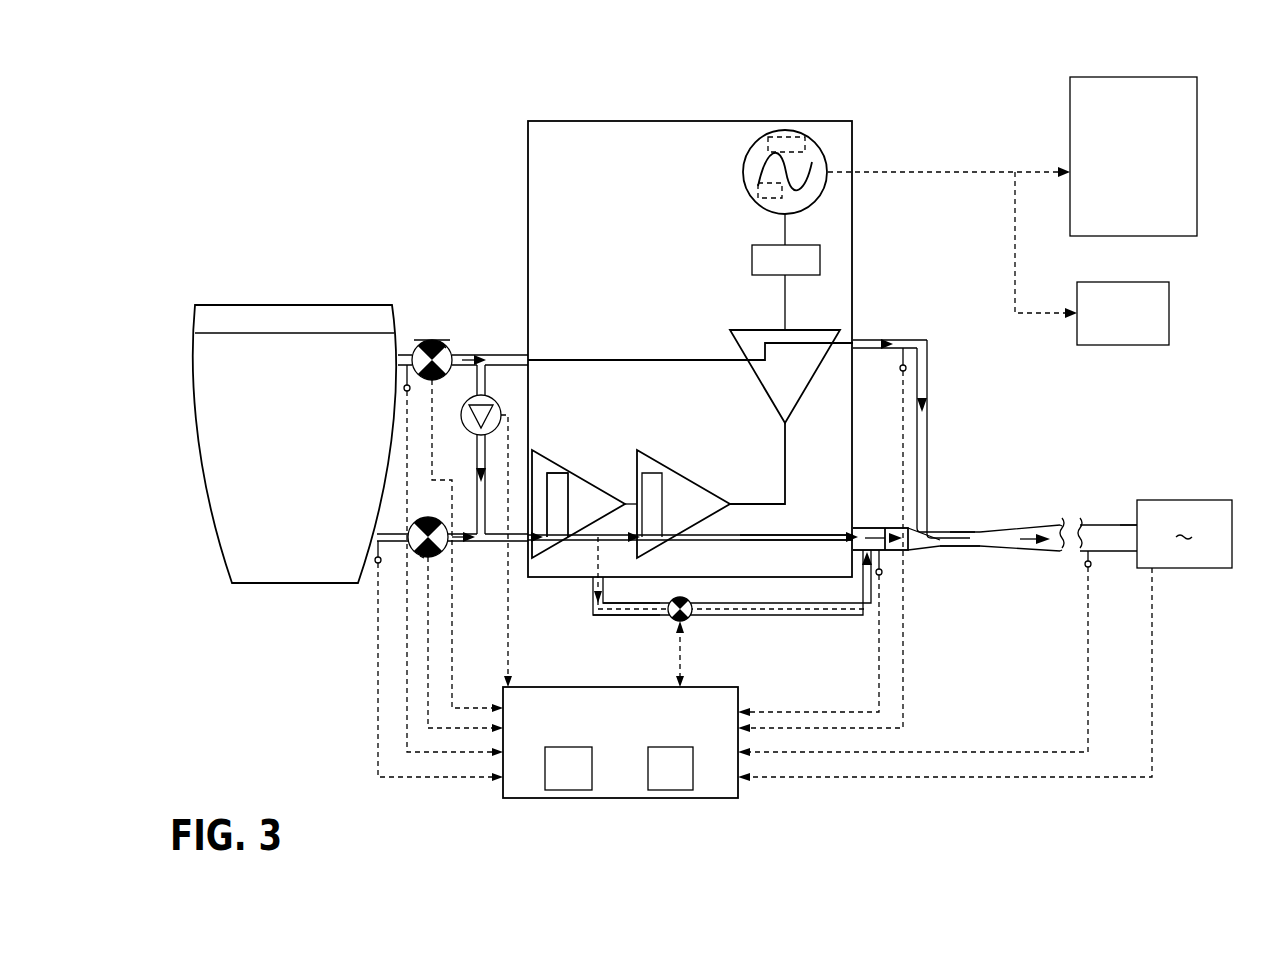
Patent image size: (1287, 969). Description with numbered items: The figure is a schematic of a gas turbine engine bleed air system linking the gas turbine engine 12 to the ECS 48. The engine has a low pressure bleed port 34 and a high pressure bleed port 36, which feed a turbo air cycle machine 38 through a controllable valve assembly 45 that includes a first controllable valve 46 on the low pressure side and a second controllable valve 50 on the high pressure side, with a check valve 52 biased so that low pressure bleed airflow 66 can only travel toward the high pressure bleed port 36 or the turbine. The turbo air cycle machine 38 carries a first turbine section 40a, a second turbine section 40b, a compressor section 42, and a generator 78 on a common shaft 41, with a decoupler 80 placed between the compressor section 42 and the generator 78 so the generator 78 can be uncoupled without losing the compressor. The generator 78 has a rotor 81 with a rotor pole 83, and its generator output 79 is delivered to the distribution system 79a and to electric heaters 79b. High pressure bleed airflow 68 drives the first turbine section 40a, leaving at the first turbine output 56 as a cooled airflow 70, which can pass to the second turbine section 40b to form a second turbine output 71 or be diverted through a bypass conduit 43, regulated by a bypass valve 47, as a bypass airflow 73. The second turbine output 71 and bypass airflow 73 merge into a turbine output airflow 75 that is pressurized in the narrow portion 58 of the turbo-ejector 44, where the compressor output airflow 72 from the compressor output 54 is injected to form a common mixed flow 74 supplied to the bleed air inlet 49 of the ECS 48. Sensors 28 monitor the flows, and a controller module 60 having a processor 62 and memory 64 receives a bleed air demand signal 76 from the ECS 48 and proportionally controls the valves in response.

The gas turbine engine 12 is at (277, 455).
The sensors 28 is at (405, 390).
The low pressure bleed port 34 is at (412, 352).
The high pressure bleed port 36 is at (408, 530).
The turbo air cycle machine 38 is at (687, 121).
The first turbine section 40a is at (550, 460).
The second turbine section 40b is at (652, 455).
The common shaft 41 is at (785, 453).
The compressor section 42 is at (763, 380).
The bypass conduit 43 is at (637, 614).
The turbo-ejector 44 is at (938, 514).
The controllable valve assembly 45 is at (428, 323).
The first controllable valve 46 is at (442, 345).
The bypass valve 47 is at (692, 620).
The ECS 48 is at (1184, 534).
The bleed air inlet 49 is at (1125, 524).
The second controllable valve 50 is at (420, 558).
The check valve 52 is at (494, 393).
The compressor output 54 is at (859, 335).
The first turbine output 56 is at (570, 538).
The narrow portion 58 is at (958, 540).
The controller module 60 is at (613, 775).
The processor 62 is at (560, 781).
The memory 64 is at (662, 781).
The low pressure bleed airflow 66 is at (464, 354).
The high pressure bleed airflow 68 is at (456, 543).
The cooled airflow 70 is at (615, 540).
The second turbine output 71 is at (795, 533).
The compressor output airflow 72 is at (928, 386).
The bypass airflow 73 is at (598, 562).
The common mixed flow 74 is at (1027, 538).
The turbine output airflow 75 is at (873, 535).
The bleed air demand signal 76 is at (1152, 635).
The generator 78 is at (800, 135).
The generator output 79 is at (922, 170).
The distribution system 79a is at (1115, 77).
The electric heaters 79b is at (1090, 345).
The decoupler 80 is at (752, 262).
The rotor 81 is at (782, 137).
The rotor pole 83 is at (752, 193).